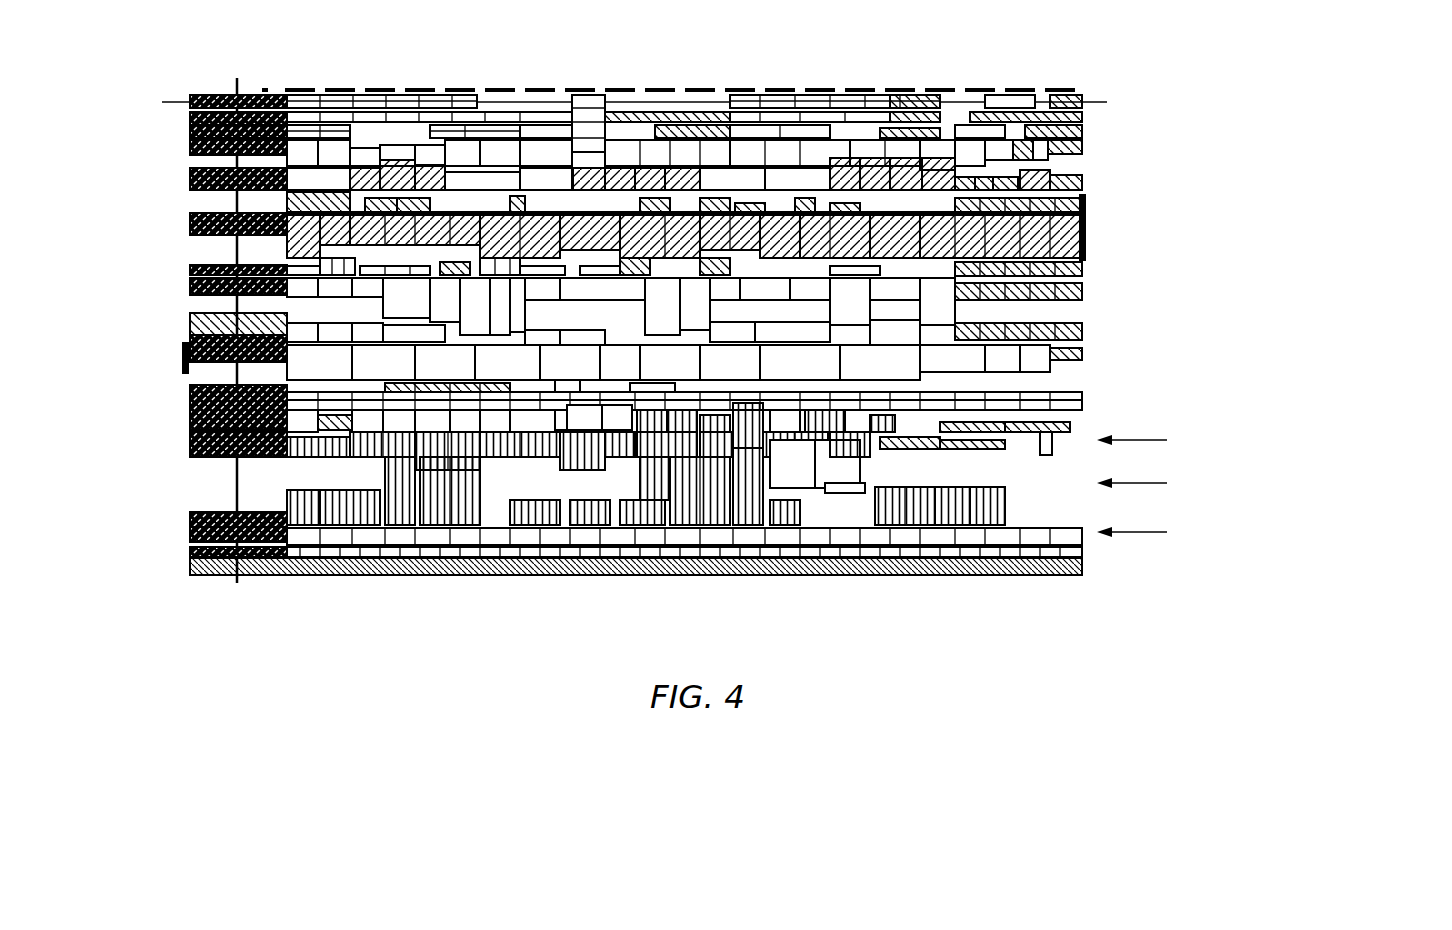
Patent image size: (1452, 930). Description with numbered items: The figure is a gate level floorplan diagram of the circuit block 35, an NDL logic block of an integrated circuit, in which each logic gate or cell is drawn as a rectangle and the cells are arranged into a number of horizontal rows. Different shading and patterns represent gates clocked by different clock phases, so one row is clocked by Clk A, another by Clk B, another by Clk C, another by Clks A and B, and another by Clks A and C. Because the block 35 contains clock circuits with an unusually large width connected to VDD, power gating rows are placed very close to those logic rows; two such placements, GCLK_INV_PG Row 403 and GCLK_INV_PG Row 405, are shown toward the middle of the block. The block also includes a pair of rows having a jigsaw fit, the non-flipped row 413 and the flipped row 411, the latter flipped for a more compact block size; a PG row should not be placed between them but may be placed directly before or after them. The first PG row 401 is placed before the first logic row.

The circuit block 35 is at (166, 42).
The first PG row 401 is at (1108, 567).
The GCLK_INV_PG Row 403 is at (1108, 275).
The GCLK_INV_PG Row 405 is at (1108, 348).
The flipped row 411 is at (558, 512).
The non-flipped row 413 is at (310, 450).